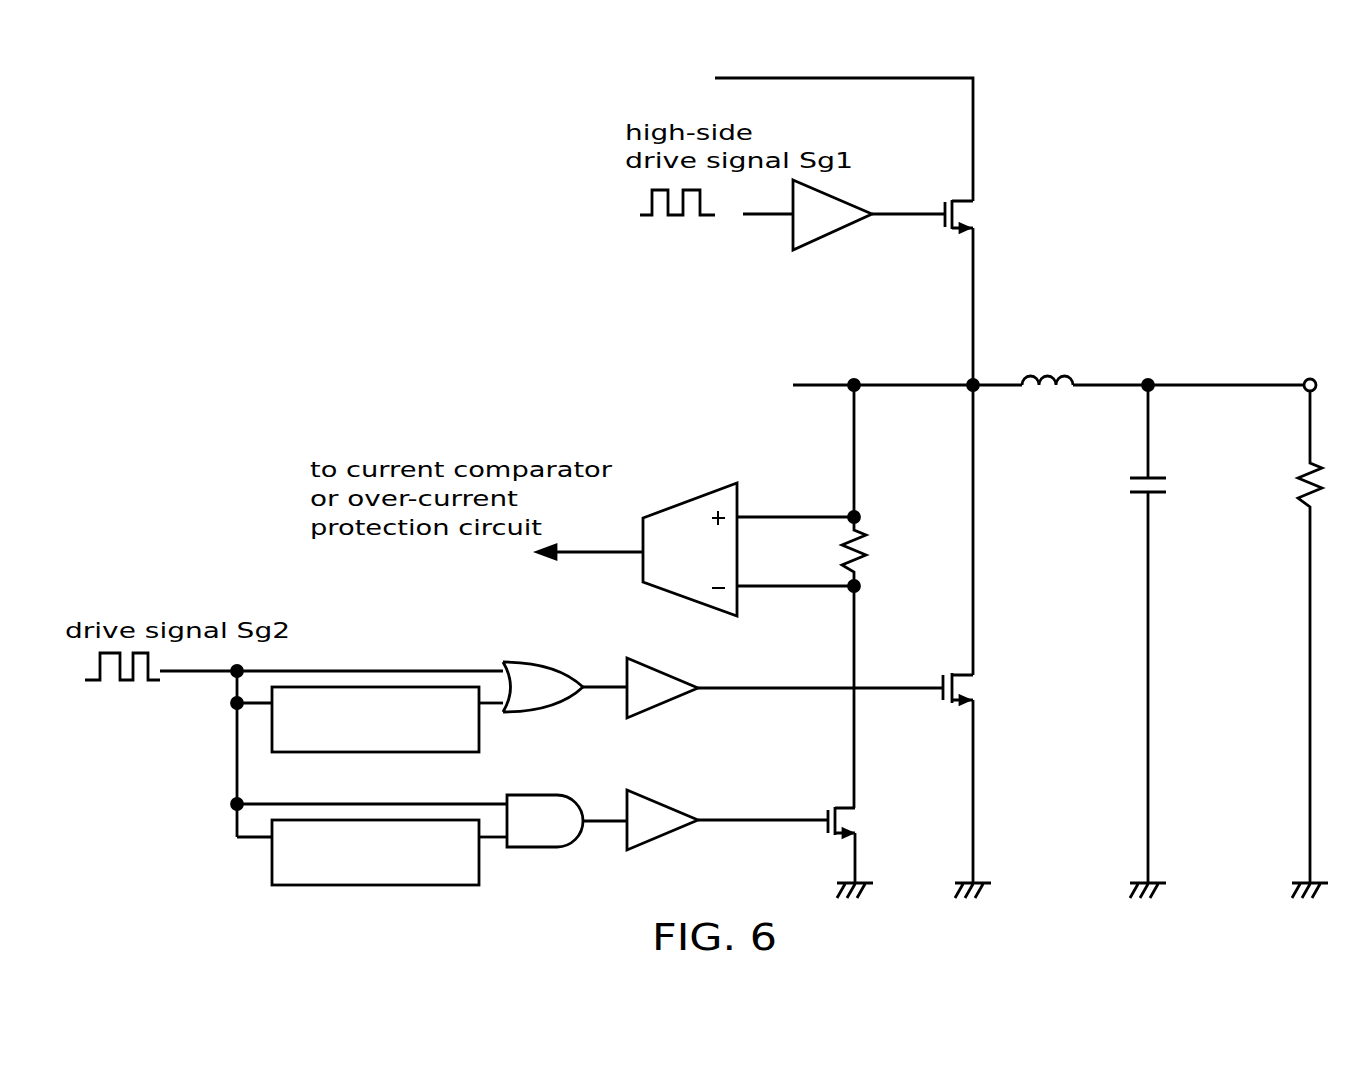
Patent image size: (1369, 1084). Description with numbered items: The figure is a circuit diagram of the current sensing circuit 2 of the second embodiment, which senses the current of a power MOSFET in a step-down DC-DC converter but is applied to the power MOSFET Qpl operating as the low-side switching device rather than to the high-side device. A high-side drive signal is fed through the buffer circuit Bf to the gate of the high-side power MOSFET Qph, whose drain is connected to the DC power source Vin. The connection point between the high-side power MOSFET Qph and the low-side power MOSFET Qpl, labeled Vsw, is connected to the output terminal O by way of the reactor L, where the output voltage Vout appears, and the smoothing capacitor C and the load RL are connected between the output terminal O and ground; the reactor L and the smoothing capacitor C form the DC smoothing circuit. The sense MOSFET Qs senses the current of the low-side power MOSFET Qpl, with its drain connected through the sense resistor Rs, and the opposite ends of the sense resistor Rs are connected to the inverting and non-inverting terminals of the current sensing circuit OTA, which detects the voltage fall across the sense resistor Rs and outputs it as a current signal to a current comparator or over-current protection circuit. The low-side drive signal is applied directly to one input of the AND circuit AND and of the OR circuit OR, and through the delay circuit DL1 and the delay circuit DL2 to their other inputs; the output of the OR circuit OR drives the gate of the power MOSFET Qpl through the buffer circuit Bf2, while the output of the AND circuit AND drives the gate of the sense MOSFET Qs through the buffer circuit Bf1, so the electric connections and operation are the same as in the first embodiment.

The current sensing circuit 2 is at (400, 194).
The DC power source Vin is at (844, 123).
The buffer circuit Bf is at (828, 237).
The power MOSFET Qph is at (975, 214).
The switching node Vsw is at (972, 383).
The reactor L is at (1050, 367).
The output voltage Vout is at (1232, 371).
The output terminal O is at (1308, 378).
The load RL is at (1298, 503).
The smoothing capacitor C is at (1131, 492).
The sense resistor Rs is at (866, 545).
The current sensing circuit OTA is at (690, 503).
The delay circuit DL2 is at (370, 686).
The delay circuit DL1 is at (368, 820).
The OR circuit OR is at (546, 660).
The AND circuit AND is at (543, 795).
The buffer circuit Bf2 is at (661, 673).
The buffer circuit Bf1 is at (665, 806).
The power MOSFET Qpl is at (976, 688).
The sense MOSFET Qs is at (858, 818).